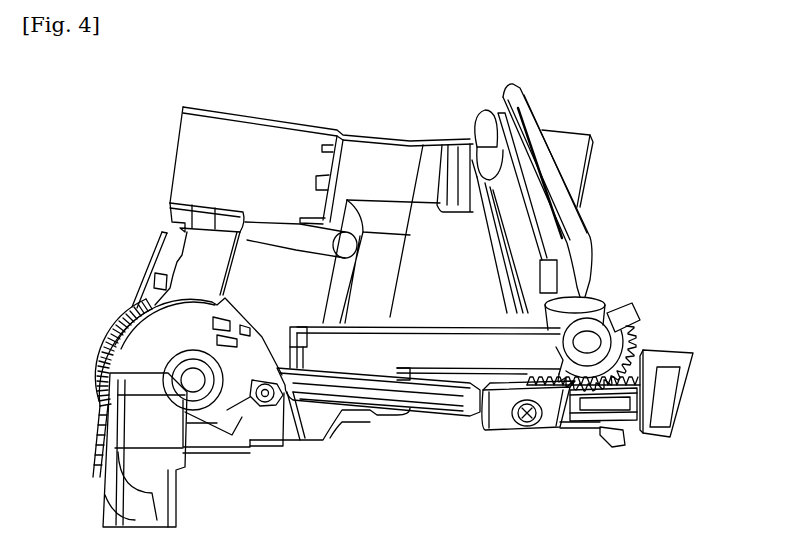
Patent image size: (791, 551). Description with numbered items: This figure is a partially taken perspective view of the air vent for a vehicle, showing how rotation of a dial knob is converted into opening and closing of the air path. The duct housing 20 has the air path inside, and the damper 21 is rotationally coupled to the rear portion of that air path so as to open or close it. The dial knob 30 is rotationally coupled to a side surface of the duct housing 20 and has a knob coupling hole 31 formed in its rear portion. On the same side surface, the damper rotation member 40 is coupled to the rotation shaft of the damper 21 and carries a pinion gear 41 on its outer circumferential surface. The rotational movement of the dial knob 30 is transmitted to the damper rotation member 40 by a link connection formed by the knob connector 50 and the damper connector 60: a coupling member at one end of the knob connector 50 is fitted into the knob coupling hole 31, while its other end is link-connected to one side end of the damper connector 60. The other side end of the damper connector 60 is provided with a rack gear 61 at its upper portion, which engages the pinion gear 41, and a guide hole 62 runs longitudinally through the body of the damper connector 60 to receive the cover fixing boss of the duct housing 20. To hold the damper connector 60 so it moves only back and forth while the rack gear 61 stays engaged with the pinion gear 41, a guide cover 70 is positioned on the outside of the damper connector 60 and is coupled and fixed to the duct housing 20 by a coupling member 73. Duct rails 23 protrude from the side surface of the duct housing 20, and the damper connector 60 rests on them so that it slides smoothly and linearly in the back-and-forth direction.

The duct housing 20 is at (410, 130).
The damper 21 is at (533, 193).
The duct rails 23 is at (392, 414).
The dial knob 30 is at (120, 315).
The knob coupling hole 31 is at (263, 410).
The damper rotation member 40 is at (587, 320).
The pinion gear 41 is at (640, 337).
The knob connector 50 is at (337, 413).
The damper connector 60 is at (457, 415).
The rack gear 61 is at (660, 370).
The guide hole 62 is at (577, 427).
The guide cover 70 is at (490, 433).
The coupling member 73 is at (524, 428).